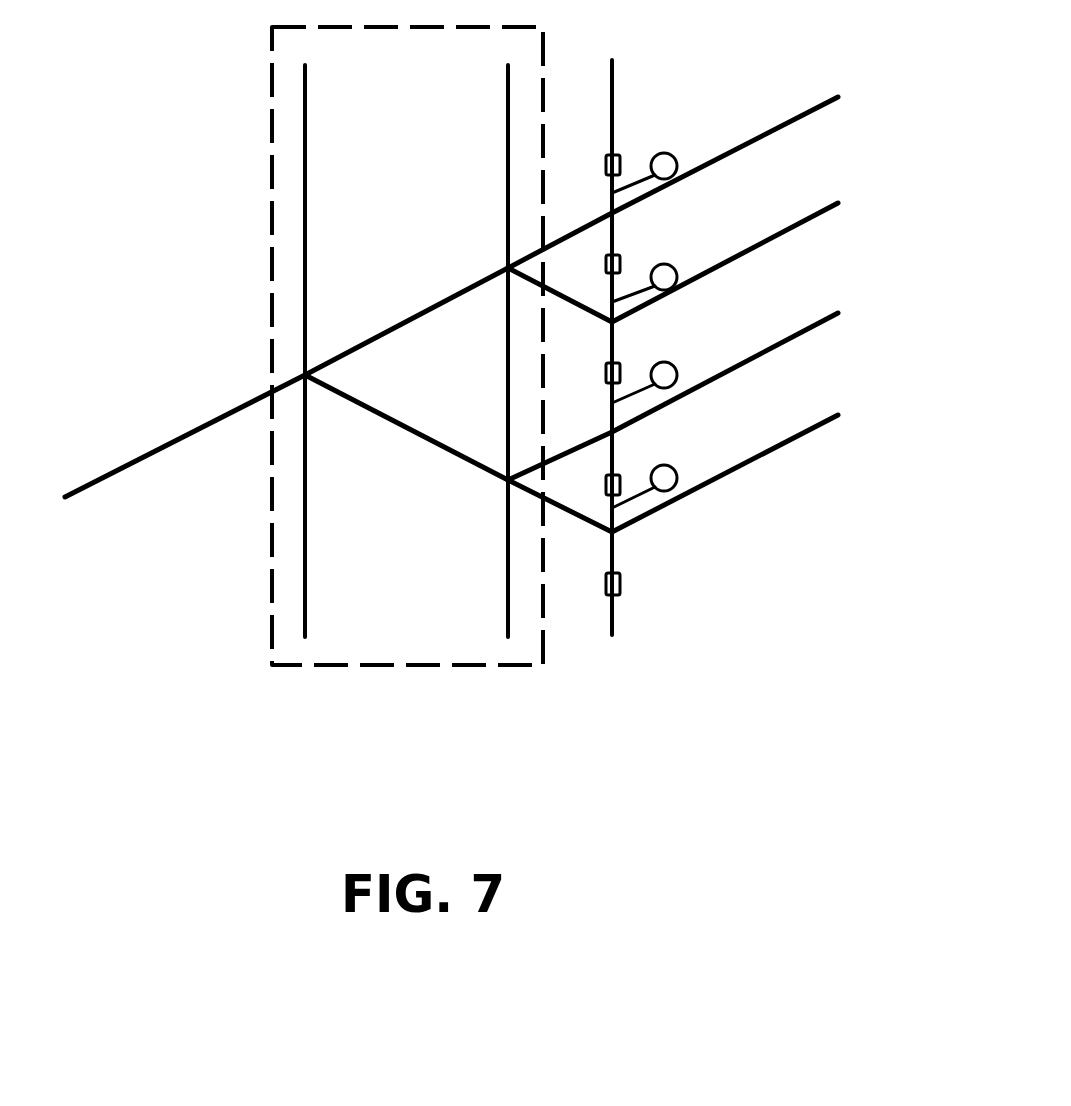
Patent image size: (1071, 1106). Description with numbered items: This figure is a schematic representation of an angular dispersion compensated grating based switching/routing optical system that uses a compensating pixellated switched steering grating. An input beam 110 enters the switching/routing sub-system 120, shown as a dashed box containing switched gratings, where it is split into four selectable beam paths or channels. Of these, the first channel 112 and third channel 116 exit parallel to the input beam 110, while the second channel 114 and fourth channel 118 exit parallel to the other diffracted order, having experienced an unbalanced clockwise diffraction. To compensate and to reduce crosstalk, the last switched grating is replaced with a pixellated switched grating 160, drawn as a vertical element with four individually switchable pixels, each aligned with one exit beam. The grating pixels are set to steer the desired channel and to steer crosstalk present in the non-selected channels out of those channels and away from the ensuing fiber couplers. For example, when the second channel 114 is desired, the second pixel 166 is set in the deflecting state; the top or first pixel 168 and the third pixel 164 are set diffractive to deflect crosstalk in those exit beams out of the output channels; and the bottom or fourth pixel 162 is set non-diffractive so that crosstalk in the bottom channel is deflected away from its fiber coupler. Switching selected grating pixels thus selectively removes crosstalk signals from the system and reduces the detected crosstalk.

The input beam 110 is at (139, 458).
The first channel 112 is at (808, 110).
The second channel 114 is at (808, 220).
The third channel 116 is at (808, 327).
The fourth channel 118 is at (812, 430).
The switching/routing sub-system 120 is at (380, 665).
The pixellated switched grating 160 is at (612, 613).
The bottom (fourth) pixel 162 is at (612, 552).
The third switched grating pixel 164 is at (612, 443).
The second switched grating pixel 166 is at (612, 337).
The top (first) switched grating pixel 168 is at (612, 227).